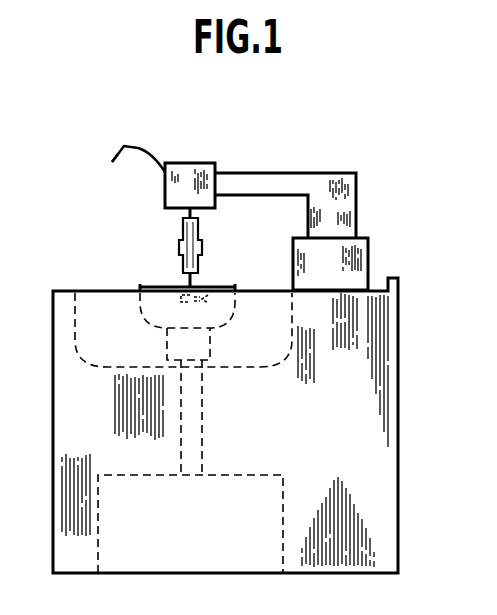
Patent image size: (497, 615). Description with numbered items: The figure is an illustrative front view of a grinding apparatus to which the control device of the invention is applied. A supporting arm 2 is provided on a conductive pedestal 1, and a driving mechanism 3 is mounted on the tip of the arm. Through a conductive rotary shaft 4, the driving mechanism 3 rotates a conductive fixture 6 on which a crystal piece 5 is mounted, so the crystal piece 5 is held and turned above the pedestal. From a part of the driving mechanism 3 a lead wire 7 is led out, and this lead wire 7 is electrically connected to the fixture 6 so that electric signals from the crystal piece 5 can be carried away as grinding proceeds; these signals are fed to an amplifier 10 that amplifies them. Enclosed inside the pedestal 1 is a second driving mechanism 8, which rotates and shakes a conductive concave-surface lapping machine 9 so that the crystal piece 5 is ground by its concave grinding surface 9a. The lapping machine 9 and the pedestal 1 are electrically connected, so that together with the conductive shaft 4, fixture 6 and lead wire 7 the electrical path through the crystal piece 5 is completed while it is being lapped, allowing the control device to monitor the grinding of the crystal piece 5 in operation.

The conductive pedestal 1 is at (400, 383).
The supporting arm 2 is at (358, 179).
The driving mechanism 3 is at (215, 163).
The conductive rotary shaft 4 is at (200, 232).
The crystal piece 5 is at (206, 301).
The conductive fixture 6 is at (230, 307).
The lead wire 7 is at (137, 146).
The driving mechanism 8 is at (256, 474).
The lapping machine 9 is at (141, 303).
The concave grinding surface 9a is at (162, 302).
The amplifier 10 is at (107, 174).